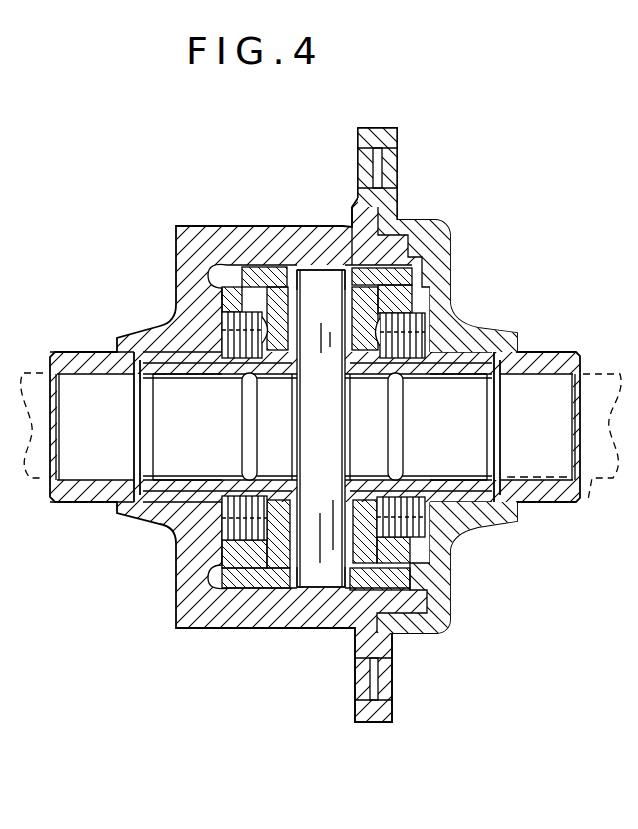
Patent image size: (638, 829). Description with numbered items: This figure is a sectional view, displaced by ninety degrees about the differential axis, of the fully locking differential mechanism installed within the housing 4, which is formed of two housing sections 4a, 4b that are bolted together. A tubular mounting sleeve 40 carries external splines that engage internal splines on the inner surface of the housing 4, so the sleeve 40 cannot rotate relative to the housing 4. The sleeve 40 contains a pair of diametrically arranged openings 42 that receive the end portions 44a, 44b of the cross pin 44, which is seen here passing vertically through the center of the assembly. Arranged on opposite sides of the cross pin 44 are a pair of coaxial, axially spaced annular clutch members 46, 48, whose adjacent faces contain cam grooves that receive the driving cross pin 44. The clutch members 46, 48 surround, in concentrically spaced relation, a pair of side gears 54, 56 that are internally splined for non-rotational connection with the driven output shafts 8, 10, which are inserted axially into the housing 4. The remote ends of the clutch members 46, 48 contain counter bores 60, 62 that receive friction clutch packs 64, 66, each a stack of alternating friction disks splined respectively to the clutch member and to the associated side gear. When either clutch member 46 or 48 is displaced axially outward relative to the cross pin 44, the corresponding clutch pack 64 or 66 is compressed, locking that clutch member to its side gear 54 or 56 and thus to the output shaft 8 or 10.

The housing 4 is at (176, 237).
The housing section 4a is at (193, 280).
The housing section 4b is at (450, 232).
The output shaft 8 is at (33, 482).
The output shaft 10 is at (591, 492).
The tubular mounting sleeve 40 is at (370, 268).
The openings 42 is at (355, 568).
The cross pin 44 is at (338, 408).
The end portion of cross pin 44a is at (303, 283).
The end portion of cross pin 44b is at (297, 588).
The clutch member 46 is at (235, 307).
The clutch member 48 is at (413, 287).
The side gear 54 is at (167, 490).
The side gear 56 is at (490, 497).
The counter bore 60 is at (267, 313).
The counter bore 62 is at (385, 333).
The friction clutch pack 64 is at (228, 522).
The friction clutch pack 66 is at (410, 517).